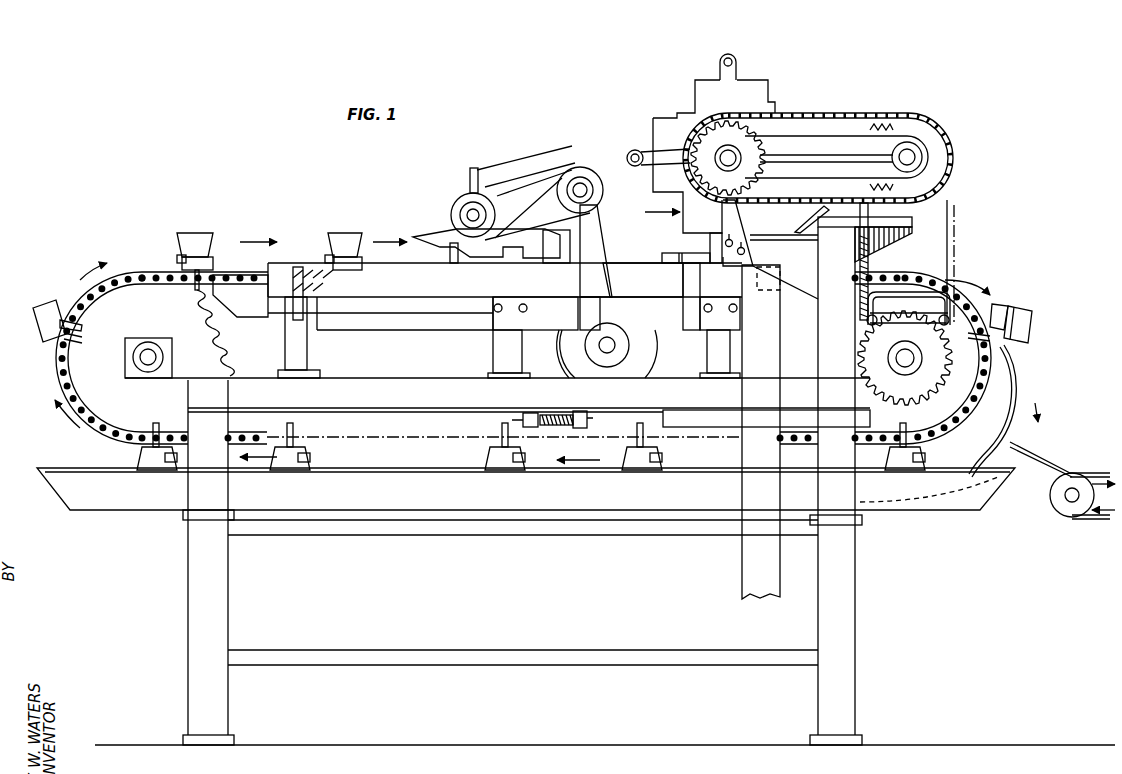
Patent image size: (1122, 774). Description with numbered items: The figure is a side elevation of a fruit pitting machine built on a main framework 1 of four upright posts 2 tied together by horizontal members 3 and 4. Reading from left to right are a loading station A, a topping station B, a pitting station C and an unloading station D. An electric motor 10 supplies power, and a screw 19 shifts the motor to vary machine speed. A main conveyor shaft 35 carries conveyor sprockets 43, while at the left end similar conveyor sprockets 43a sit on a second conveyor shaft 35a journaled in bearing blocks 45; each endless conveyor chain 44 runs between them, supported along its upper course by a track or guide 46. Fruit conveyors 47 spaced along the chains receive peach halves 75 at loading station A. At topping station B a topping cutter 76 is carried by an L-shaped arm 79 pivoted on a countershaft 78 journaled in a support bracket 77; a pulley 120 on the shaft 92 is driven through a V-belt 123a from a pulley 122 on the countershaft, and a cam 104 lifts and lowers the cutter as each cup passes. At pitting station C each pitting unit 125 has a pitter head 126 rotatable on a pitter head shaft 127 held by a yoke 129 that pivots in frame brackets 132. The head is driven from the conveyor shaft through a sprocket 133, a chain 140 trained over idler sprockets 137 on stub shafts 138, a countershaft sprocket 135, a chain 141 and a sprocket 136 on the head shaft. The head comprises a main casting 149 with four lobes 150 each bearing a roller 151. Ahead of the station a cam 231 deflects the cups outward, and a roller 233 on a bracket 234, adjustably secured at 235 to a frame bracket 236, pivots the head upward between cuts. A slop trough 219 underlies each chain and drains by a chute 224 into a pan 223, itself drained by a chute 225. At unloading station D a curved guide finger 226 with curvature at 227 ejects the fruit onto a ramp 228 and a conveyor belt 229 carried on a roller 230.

The main framework 1 is at (862, 563).
The upright posts 2 is at (188, 592).
The horizontal member 3 is at (389, 532).
The horizontal member 4 is at (403, 650).
The electric motor 10 is at (566, 348).
The screw 19 is at (512, 424).
The main conveyor shaft 35 is at (913, 365).
The second conveyor shaft 35a is at (153, 352).
The conveyor sprockets 43 is at (950, 413).
The conveyor sprockets 43a is at (144, 311).
The conveyor chain 44 is at (147, 270).
The bearing blocks 45 is at (125, 355).
The track or guide 46 is at (377, 312).
The fruit conveyors 47 is at (220, 240).
The peach halves 75 is at (201, 233).
The topping cutter 76 is at (493, 164).
The topping cutter support bracket 77 is at (594, 228).
The countershaft 78 is at (583, 190).
The L-shaped arm 79 is at (513, 173).
The shaft 92 is at (470, 212).
The cam 104 is at (425, 235).
The pulley 120 is at (453, 207).
The pulley 122 is at (590, 173).
The V-belt 123a is at (542, 177).
The pitting unit 125 is at (690, 73).
The pitter head 126 is at (707, 77).
The pitter head shaft 127 is at (720, 160).
The yoke 129 is at (893, 135).
The frame brackets 132 is at (893, 230).
The sprocket 133 is at (903, 395).
The sprocket 135 is at (937, 167).
The sprocket 136 is at (693, 138).
The idler sprockets 137 is at (930, 301).
The stub shaft 138 is at (942, 280).
The chain 140 is at (955, 243).
The chain 141 is at (860, 112).
The main casting 149 is at (697, 92).
The lobes 150 is at (655, 117).
The roller 151 is at (735, 58).
The slop trough 219 is at (437, 293).
The pan 223 is at (463, 477).
The chute 224 is at (752, 395).
The chute 225 is at (744, 565).
The curved guide finger 226 is at (1015, 382).
The curvature 227 is at (1017, 345).
The ramp 228 is at (1040, 447).
The conveyor belt 229 is at (1105, 473).
The roller 230 is at (1070, 512).
The cam 231 is at (660, 257).
The roller 233 is at (721, 233).
The bracket 234 is at (737, 227).
The adjustable securing point 235 is at (746, 252).
The frame bracket 236 is at (793, 278).
The loading station A is at (212, 206).
The topping station B is at (474, 158).
The pitting station C is at (779, 76).
The unloading station D is at (1037, 307).